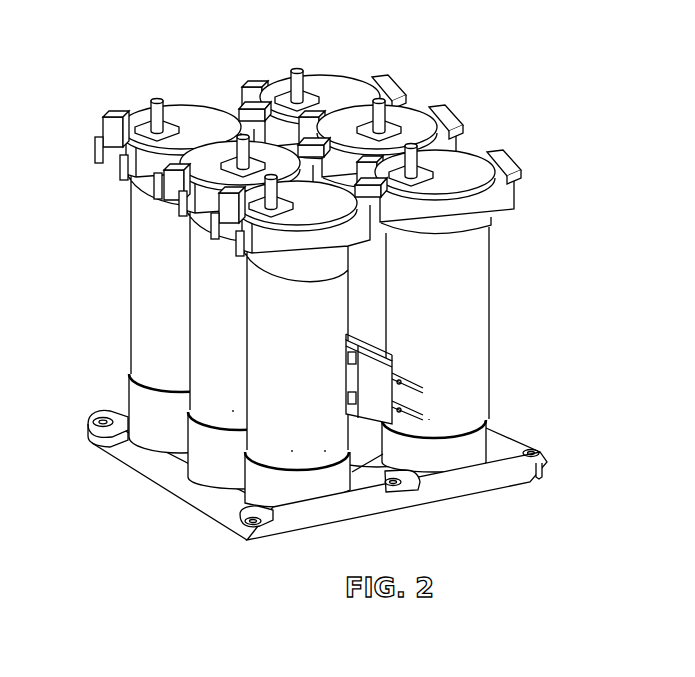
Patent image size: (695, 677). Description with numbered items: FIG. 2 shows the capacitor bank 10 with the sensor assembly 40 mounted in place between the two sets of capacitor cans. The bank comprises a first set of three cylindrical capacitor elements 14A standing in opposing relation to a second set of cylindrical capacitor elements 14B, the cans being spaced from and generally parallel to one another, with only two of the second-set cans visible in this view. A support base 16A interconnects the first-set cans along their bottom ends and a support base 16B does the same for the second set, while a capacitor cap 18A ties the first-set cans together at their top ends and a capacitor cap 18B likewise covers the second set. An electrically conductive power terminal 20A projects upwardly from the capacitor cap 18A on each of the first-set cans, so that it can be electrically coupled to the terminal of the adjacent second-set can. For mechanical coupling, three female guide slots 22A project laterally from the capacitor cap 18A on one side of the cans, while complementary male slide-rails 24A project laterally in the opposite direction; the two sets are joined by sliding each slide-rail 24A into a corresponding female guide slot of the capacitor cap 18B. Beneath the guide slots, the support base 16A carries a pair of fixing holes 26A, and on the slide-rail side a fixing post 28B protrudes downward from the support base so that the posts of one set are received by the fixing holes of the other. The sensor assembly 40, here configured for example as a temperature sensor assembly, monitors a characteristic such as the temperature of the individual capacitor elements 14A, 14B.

The capacitor bank 10 is at (334, 272).
The cylindrical capacitor elements 14A is at (219, 271).
The cylindrical capacitor elements 14B is at (444, 286).
The support base 16A is at (207, 452).
The support base 16B is at (485, 427).
The capacitor cap 18A is at (183, 98).
The capacitor cap 18B is at (335, 83).
The power terminal 20A is at (145, 115).
The female guide slots 22A is at (96, 146).
The male slide-rails 24A is at (396, 238).
The fixing holes 26A is at (102, 418).
The fixing post 28B is at (544, 472).
The sensor assembly 40 is at (408, 363).